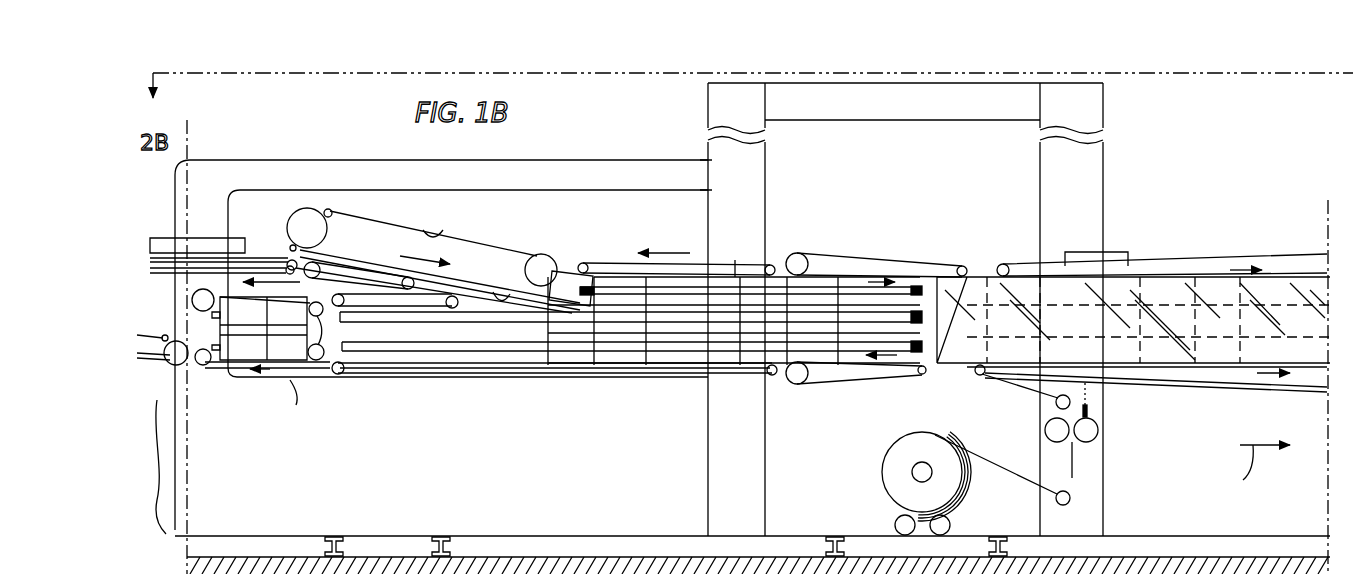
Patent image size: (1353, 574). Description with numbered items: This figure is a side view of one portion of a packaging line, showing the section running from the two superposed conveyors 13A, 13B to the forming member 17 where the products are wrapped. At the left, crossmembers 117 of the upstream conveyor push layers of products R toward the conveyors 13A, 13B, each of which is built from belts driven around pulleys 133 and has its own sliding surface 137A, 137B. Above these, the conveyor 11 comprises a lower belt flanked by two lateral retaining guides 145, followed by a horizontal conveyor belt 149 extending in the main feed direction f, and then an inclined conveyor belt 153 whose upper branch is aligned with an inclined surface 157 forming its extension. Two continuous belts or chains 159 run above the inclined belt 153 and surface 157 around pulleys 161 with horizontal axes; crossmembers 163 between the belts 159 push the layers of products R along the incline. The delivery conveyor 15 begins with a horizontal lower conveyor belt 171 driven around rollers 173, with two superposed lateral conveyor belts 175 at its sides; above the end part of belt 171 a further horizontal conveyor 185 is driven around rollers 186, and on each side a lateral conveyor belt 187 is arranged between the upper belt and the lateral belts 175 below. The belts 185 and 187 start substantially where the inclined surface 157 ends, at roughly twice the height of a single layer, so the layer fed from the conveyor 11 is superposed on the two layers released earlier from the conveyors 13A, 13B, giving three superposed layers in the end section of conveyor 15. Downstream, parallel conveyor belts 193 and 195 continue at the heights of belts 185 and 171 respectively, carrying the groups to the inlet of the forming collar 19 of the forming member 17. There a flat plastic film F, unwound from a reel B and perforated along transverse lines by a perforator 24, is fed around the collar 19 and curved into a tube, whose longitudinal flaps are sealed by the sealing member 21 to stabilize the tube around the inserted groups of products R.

The conveyor 11 is at (288, 193).
The conveyor 13A is at (292, 381).
The conveyor 13B is at (241, 287).
The delivery conveyor 15 is at (684, 412).
The forming member 17 is at (1272, 238).
The forming collar 19 is at (958, 360).
The sealing member 21 is at (1083, 258).
The perforator 24 is at (1092, 424).
The crossmembers 117 is at (163, 334).
The pulleys 133 is at (206, 291).
The sliding surface 137A is at (295, 402).
The sliding surface 137B is at (324, 330).
The lateral retaining guides 145 is at (160, 237).
The conveyor belt 149 is at (201, 256).
The conveyor belt 153 is at (332, 262).
The inclined surface 157 is at (500, 298).
The continuous belts 159 is at (440, 236).
The pulleys 161 is at (307, 212).
The crossmembers 163 is at (549, 254).
The lower conveyor belt 171 is at (452, 376).
The rollers 173 is at (348, 376).
The lateral conveyor belts 175 is at (510, 326).
The horizontal conveyor 185 is at (697, 257).
The rollers 186 is at (592, 265).
The conveyor belt 187 is at (738, 258).
The conveyor belt 193 is at (882, 249).
The conveyor belt 195 is at (856, 382).
The products R is at (578, 258).
The reel B is at (893, 478).
The plastic film F is at (1072, 478).
The main feed direction f is at (1257, 465).